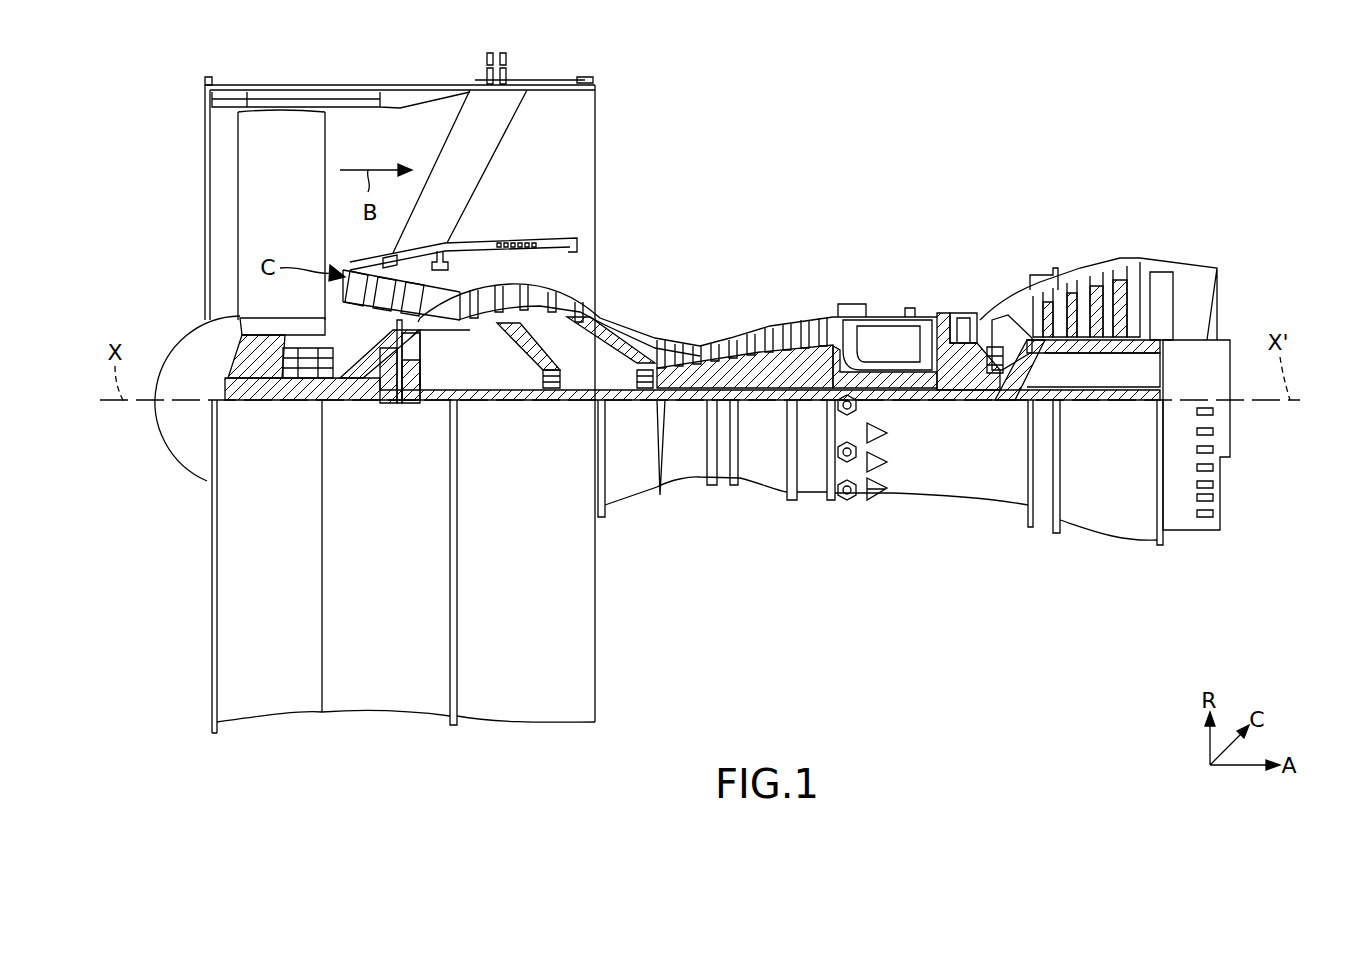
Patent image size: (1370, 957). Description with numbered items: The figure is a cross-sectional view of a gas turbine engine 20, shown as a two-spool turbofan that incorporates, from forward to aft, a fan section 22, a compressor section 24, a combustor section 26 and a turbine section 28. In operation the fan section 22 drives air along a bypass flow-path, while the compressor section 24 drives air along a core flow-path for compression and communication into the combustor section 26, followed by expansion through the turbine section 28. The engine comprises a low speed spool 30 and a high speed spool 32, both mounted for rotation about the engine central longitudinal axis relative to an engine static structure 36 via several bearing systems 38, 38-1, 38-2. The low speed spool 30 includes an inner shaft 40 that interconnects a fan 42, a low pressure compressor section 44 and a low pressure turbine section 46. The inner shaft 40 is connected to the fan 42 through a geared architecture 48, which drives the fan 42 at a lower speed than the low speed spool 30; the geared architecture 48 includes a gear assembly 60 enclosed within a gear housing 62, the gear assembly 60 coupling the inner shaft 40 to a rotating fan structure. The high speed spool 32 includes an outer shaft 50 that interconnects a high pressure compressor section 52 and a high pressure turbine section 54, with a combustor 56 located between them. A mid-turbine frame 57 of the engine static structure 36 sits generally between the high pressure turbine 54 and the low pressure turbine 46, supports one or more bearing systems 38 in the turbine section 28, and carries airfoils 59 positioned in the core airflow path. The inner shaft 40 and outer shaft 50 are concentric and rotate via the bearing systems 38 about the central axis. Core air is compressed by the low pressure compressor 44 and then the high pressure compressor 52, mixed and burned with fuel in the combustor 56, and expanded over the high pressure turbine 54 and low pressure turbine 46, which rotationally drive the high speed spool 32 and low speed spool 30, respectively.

The gas turbine engine 20 is at (943, 114).
The fan section 22 is at (447, 63).
The compressor section 24 is at (455, 196).
The combustor section 26 is at (943, 196).
The turbine section 28 is at (1160, 196).
The low speed spool 30 is at (766, 440).
The high speed spool 32 is at (810, 367).
The engine static structure 36 is at (188, 727).
The bearing system 38 is at (1003, 392).
The bearing system 38-1 is at (297, 378).
The bearing system 38-2 is at (548, 405).
The inner shaft 40 is at (620, 400).
The fan 42 is at (265, 218).
The low pressure compressor section 44 is at (527, 298).
The low pressure turbine section 46 is at (1092, 280).
The geared architecture 48 is at (411, 432).
The outer shaft 50 is at (895, 388).
The high pressure compressor section 52 is at (760, 330).
The high pressure turbine section 54 is at (960, 312).
The combustor 56 is at (883, 340).
The mid-turbine frame 57 is at (1000, 313).
The airfoils 59 is at (1010, 320).
The gear assembly 60 is at (417, 380).
The gear housing 62 is at (412, 343).